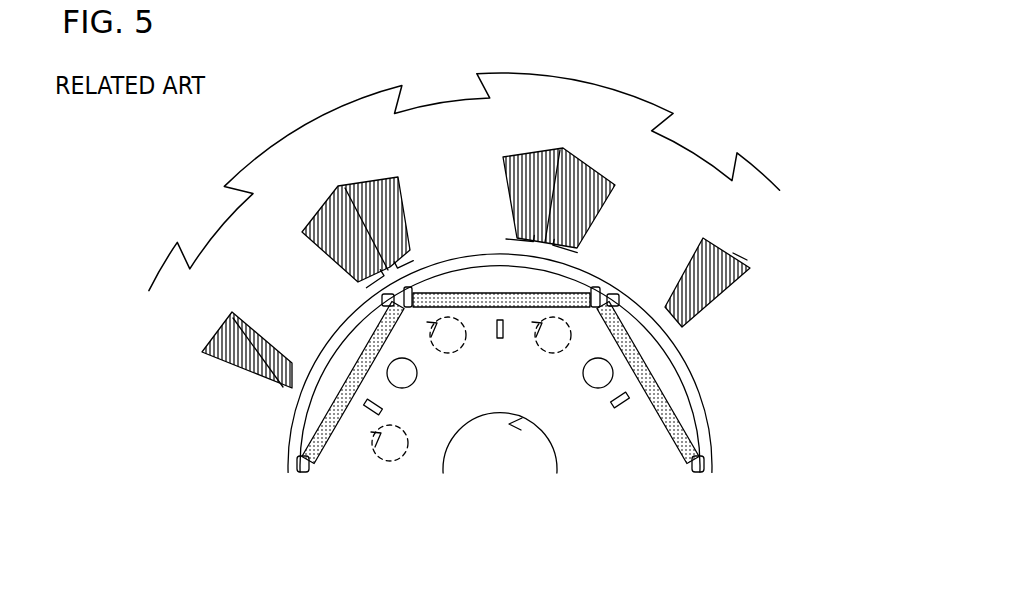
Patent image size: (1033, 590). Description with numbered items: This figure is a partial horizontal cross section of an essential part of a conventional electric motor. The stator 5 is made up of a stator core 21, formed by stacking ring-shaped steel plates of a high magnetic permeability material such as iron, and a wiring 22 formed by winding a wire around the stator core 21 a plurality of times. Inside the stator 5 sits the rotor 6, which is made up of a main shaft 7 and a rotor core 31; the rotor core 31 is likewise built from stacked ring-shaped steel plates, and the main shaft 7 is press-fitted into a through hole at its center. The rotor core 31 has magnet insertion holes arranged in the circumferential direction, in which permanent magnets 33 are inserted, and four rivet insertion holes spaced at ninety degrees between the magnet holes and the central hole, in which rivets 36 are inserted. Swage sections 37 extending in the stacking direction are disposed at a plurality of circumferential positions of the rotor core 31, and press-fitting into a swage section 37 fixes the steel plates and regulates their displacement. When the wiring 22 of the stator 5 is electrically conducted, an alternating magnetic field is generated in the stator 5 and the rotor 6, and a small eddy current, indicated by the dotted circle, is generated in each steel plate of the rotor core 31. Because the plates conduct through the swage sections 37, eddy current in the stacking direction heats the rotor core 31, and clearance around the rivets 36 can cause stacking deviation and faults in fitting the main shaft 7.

The stator 5 is at (502, 230).
The rotor 6 is at (500, 398).
The main shaft 7 is at (487, 448).
The stator core 21 is at (686, 160).
The wiring 22 is at (592, 170).
The rotor core 31 is at (313, 417).
The permanent magnets 33 is at (327, 452).
The rivets 36 is at (413, 372).
The swage sections 37 is at (363, 437).